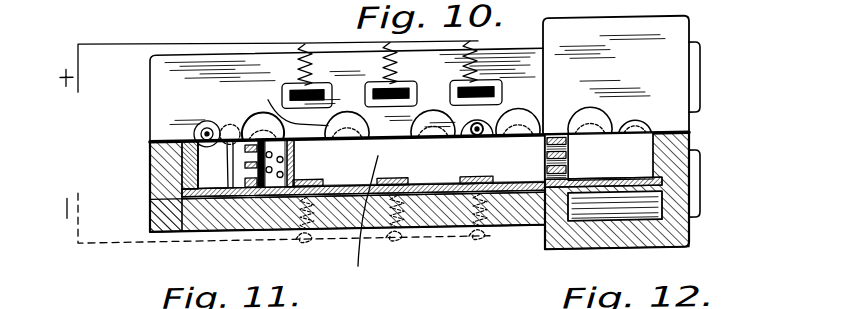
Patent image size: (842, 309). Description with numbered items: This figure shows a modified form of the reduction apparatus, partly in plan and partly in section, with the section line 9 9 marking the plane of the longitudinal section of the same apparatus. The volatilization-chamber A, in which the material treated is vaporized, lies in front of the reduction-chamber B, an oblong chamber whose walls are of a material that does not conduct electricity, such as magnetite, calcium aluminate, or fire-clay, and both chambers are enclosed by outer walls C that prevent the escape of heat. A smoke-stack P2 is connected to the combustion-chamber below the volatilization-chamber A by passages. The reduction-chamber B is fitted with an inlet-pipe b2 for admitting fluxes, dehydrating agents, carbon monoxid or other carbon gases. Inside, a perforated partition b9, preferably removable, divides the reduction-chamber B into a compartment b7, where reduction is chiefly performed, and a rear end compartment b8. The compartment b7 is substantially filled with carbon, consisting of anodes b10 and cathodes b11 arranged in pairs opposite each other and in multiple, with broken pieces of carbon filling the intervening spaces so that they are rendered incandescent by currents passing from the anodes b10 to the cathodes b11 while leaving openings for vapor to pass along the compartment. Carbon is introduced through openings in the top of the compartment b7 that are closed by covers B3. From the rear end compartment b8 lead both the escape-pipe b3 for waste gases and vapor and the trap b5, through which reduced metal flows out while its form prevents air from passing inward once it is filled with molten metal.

The smoke-stack P2 is at (588, 110).
The volatilization-chamber A is at (622, 190).
The reduction-chamber B is at (366, 219).
The outer walls C is at (514, 211).
The section line 9 9 is at (150, 137).
The inlet-pipe b2 is at (484, 126).
The escape-pipe b3 is at (208, 127).
The covers B3 is at (263, 120).
The trap b5 is at (235, 186).
The compartment b7 is at (378, 182).
The rear end compartment b8 is at (212, 164).
The perforated partition b9 is at (298, 176).
The anodes b10 is at (315, 86).
The cathodes b11 is at (323, 182).